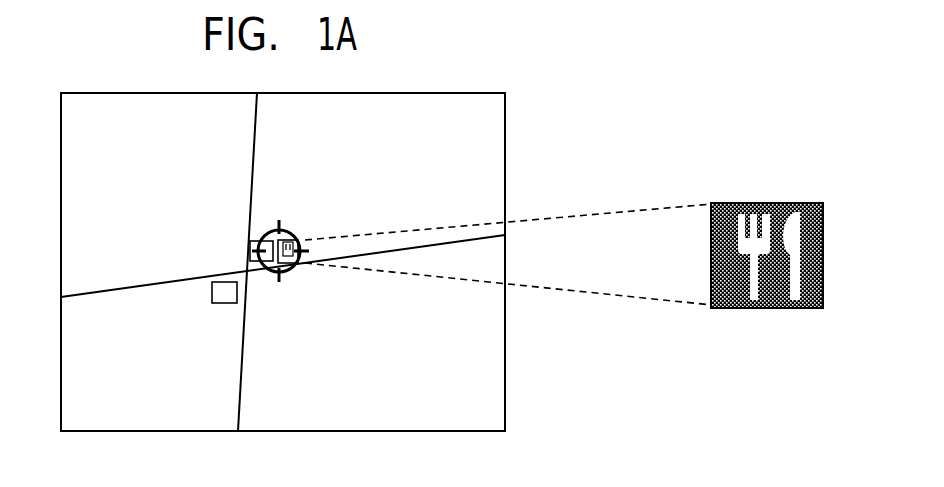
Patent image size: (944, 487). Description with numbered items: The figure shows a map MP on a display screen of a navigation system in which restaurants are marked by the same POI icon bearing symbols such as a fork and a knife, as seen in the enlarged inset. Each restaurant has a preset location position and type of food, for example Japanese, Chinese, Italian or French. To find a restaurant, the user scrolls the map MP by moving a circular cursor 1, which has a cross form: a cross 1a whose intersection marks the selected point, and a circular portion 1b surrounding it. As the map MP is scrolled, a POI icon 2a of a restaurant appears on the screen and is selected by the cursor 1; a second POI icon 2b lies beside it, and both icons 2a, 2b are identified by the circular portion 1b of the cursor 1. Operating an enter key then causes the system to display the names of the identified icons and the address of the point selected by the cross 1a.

The circular cursor 1 is at (270, 238).
The cross 1a is at (279, 222).
The circular portion 1b is at (292, 268).
The POI icon 2a is at (305, 239).
The POI icon 2b is at (254, 241).
The map MP is at (482, 380).